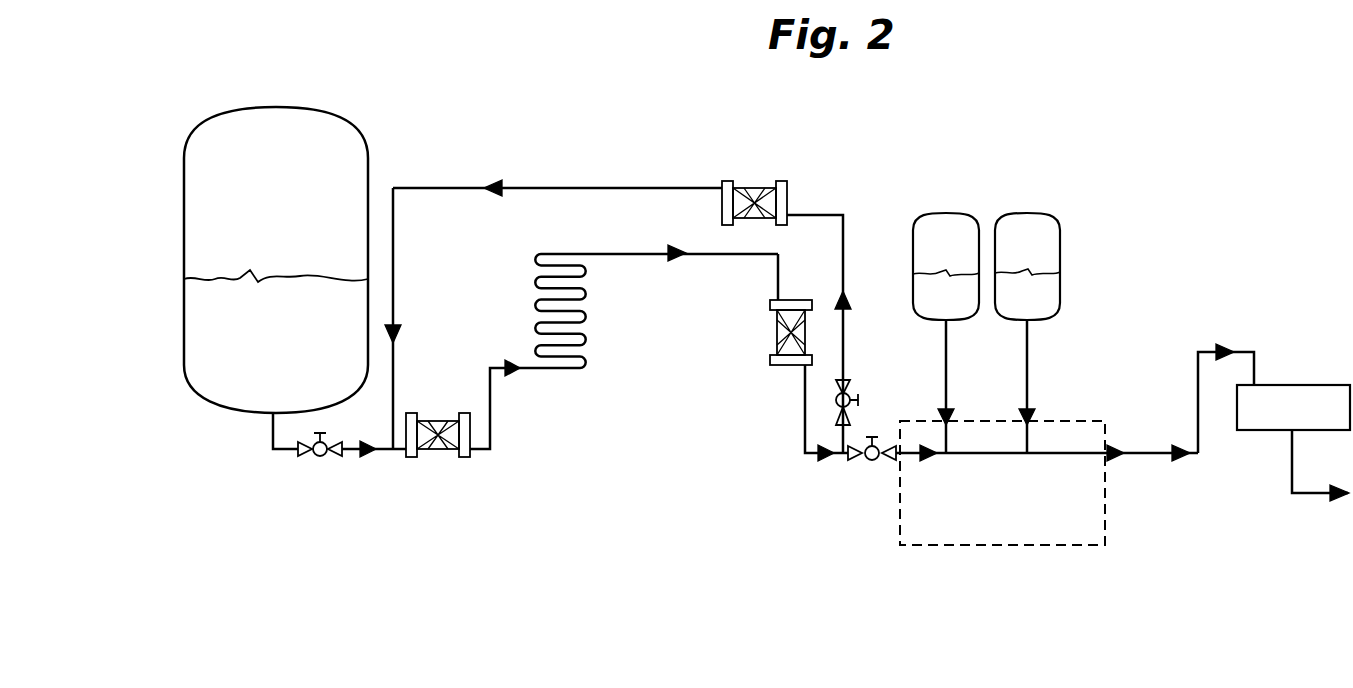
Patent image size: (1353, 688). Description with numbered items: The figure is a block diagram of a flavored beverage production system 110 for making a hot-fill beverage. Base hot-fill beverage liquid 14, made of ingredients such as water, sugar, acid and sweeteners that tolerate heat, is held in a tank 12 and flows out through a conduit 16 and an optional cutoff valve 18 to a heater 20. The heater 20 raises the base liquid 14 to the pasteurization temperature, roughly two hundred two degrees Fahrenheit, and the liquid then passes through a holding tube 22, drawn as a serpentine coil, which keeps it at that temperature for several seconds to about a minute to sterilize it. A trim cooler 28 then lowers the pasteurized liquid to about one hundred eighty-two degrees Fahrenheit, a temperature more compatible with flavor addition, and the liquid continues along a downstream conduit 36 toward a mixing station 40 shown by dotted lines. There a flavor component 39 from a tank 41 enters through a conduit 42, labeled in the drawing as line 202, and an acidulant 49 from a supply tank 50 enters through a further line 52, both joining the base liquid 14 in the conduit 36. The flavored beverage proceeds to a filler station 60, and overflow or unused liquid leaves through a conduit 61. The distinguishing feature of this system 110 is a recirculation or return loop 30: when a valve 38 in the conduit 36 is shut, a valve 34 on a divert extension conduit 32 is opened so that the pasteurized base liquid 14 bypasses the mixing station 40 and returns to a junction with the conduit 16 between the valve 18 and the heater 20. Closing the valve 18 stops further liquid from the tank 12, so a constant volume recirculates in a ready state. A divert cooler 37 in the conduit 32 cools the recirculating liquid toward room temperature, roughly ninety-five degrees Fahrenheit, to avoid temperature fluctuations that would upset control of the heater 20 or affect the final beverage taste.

The tank 12 is at (323, 111).
The base hot-fill beverage liquid 14 is at (297, 371).
The conduit 16 is at (279, 452).
The cutoff valve 18 is at (318, 458).
The heater 20 is at (455, 458).
The holding tube 22 is at (585, 365).
The trim cooler 28 is at (770, 340).
The recirculation or return loop 30 is at (575, 182).
The divert extension conduit 32 is at (627, 188).
The valve 34 is at (850, 392).
The conduit 36 is at (900, 494).
The divert cooler 37 is at (757, 182).
The valve 38 is at (870, 461).
The flavor component 39 is at (953, 309).
The mixing station 40 is at (977, 546).
The tank 41 is at (946, 212).
The conduit 42 is at (946, 374).
The acidulant 49 is at (1034, 309).
The supply tank 50 is at (1032, 213).
The line 52 is at (1028, 343).
The filler station 60 is at (1285, 385).
The conduit 61 is at (1292, 468).
The flavored beverage production system 110 is at (613, 128).
The line 202 is at (970, 345).